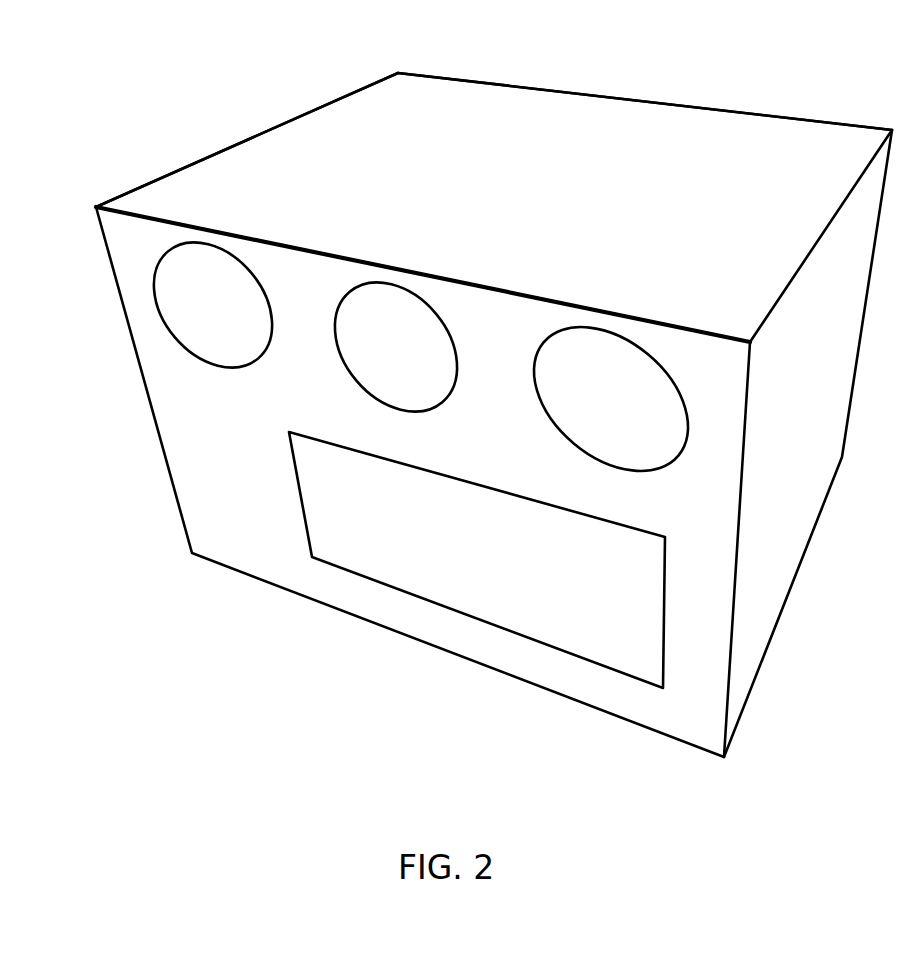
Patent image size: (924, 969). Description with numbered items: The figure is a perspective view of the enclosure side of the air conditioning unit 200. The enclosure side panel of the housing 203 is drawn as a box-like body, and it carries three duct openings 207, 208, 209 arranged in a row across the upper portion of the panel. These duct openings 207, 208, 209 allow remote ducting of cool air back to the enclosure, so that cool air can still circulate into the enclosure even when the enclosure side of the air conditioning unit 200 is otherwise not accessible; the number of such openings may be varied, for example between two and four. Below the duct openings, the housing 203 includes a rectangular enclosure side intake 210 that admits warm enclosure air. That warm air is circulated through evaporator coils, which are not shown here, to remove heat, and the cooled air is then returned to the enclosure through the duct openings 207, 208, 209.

The air conditioning unit 200 is at (160, 112).
The housing 203 is at (638, 115).
The duct opening 207 is at (177, 328).
The duct opening 208 is at (387, 400).
The duct opening 209 is at (677, 377).
The enclosure side intake 210 is at (362, 577).